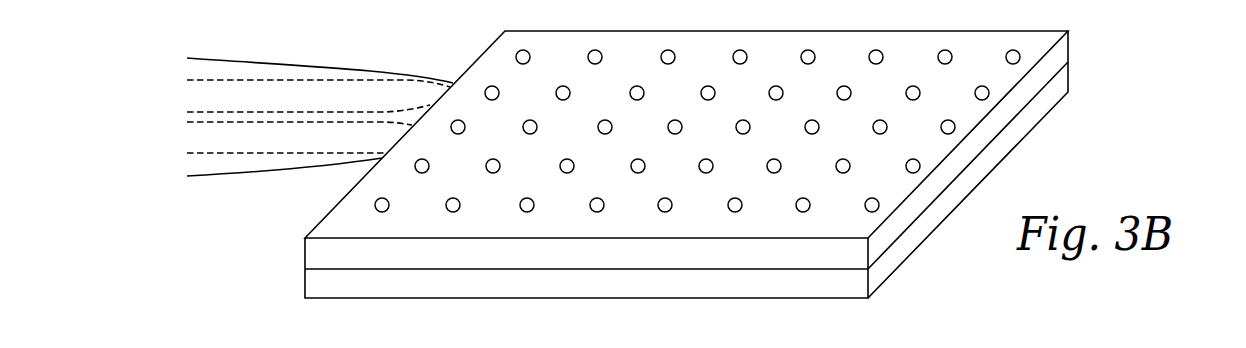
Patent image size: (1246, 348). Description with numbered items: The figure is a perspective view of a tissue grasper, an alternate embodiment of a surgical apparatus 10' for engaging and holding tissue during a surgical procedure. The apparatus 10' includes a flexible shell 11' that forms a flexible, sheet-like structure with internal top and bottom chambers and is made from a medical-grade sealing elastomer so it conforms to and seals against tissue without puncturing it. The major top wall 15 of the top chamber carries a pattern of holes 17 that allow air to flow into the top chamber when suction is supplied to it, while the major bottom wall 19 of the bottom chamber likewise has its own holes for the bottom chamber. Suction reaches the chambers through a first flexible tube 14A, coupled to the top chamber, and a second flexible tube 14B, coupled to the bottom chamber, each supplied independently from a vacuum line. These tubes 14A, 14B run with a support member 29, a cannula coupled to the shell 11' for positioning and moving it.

The surgical apparatus 10' is at (750, 168).
The flexible shell 11' is at (940, 183).
The first flexible tube 14A is at (350, 80).
The second flexible tube 14B is at (317, 153).
The major top wall 15 is at (768, 62).
The holes 17 is at (677, 53).
The major bottom wall 19 is at (777, 300).
The support member 29 is at (238, 177).